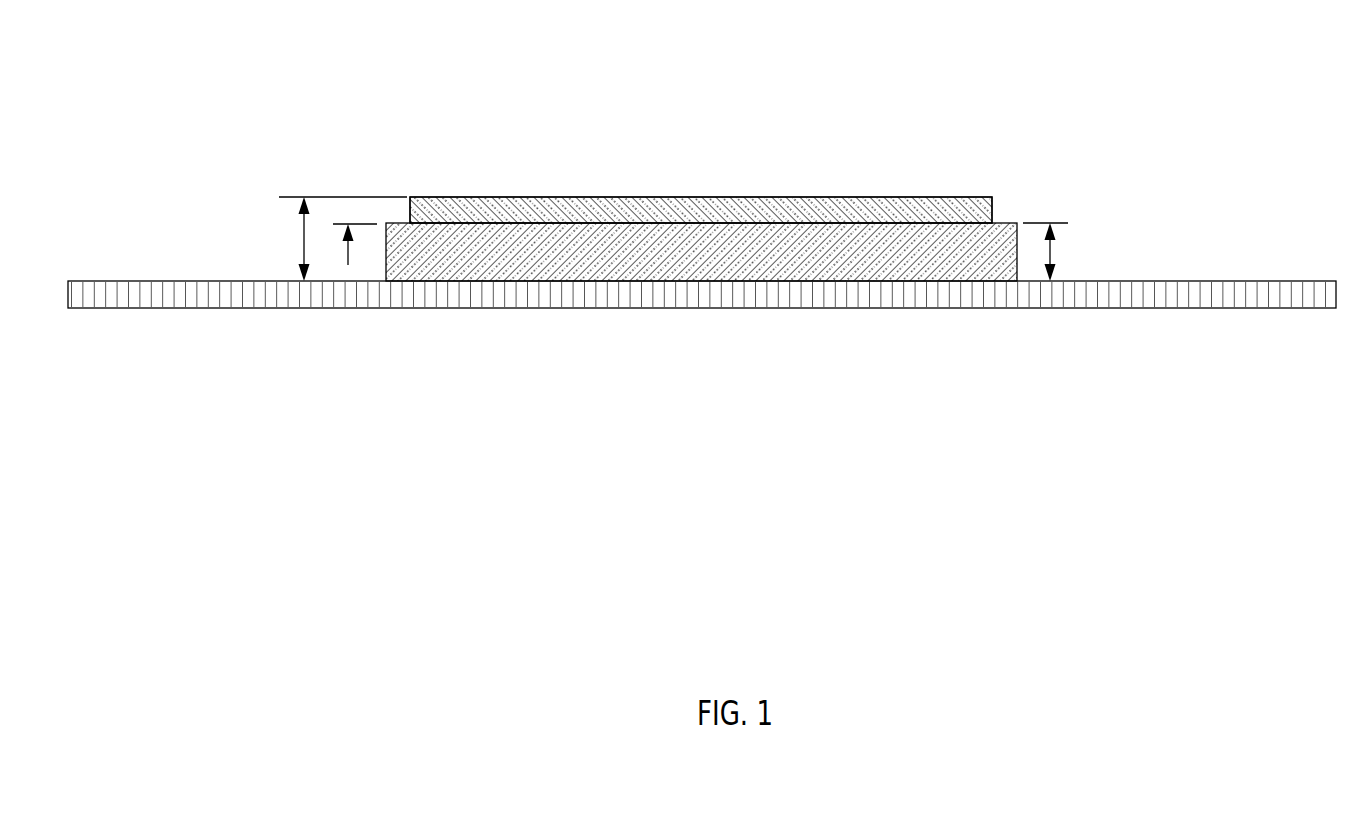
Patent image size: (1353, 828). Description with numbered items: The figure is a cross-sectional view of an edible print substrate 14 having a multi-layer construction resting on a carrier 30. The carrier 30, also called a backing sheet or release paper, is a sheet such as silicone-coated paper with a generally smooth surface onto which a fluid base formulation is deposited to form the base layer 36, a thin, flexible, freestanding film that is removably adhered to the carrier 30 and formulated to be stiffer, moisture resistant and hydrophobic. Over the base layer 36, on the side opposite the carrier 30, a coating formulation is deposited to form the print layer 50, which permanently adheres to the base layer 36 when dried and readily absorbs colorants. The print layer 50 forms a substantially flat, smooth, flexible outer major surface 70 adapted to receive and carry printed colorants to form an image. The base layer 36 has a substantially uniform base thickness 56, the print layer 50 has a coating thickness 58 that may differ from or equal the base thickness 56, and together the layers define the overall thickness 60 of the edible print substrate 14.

The edible print substrate 14 is at (1099, 92).
The carrier 30 is at (1173, 298).
The base layer 36 is at (817, 240).
The print layer 50 is at (675, 203).
The base thickness 56 is at (1052, 252).
The coating thickness 58 is at (352, 182).
The overall thickness 60 is at (302, 242).
The outer major surface 70 is at (582, 183).